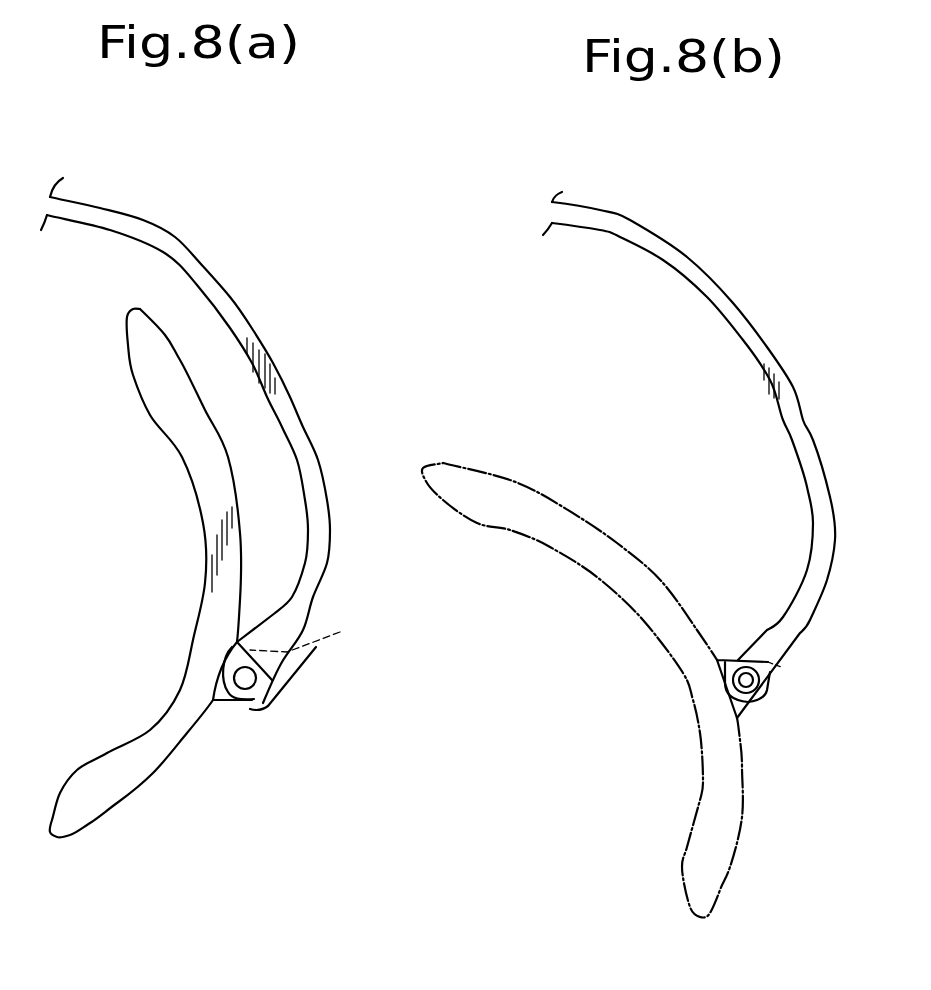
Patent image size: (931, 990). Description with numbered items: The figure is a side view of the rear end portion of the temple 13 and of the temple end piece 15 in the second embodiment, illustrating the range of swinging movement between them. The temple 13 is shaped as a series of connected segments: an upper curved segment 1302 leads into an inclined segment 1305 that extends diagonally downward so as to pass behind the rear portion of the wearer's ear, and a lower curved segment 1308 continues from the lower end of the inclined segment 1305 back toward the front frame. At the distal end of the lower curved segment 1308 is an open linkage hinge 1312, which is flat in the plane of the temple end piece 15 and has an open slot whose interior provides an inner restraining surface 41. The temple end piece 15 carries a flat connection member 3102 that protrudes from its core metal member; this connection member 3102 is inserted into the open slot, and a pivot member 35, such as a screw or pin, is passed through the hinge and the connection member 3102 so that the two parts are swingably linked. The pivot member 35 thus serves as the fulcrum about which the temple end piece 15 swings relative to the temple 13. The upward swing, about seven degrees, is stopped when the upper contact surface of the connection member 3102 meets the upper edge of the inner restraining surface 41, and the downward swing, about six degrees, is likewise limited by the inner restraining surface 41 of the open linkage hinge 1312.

The temple 13 is at (233, 444).
The upper curved segment 1302 is at (143, 222).
The inclined segment 1305 is at (270, 358).
The lower curved segment 1308 is at (332, 568).
The open linkage hinge 1312 is at (290, 676).
The inner restraining surface 41 is at (315, 634).
The pivot member 35 is at (252, 686).
The flat connection member 3102 is at (222, 703).
The temple end piece 15 is at (134, 384).